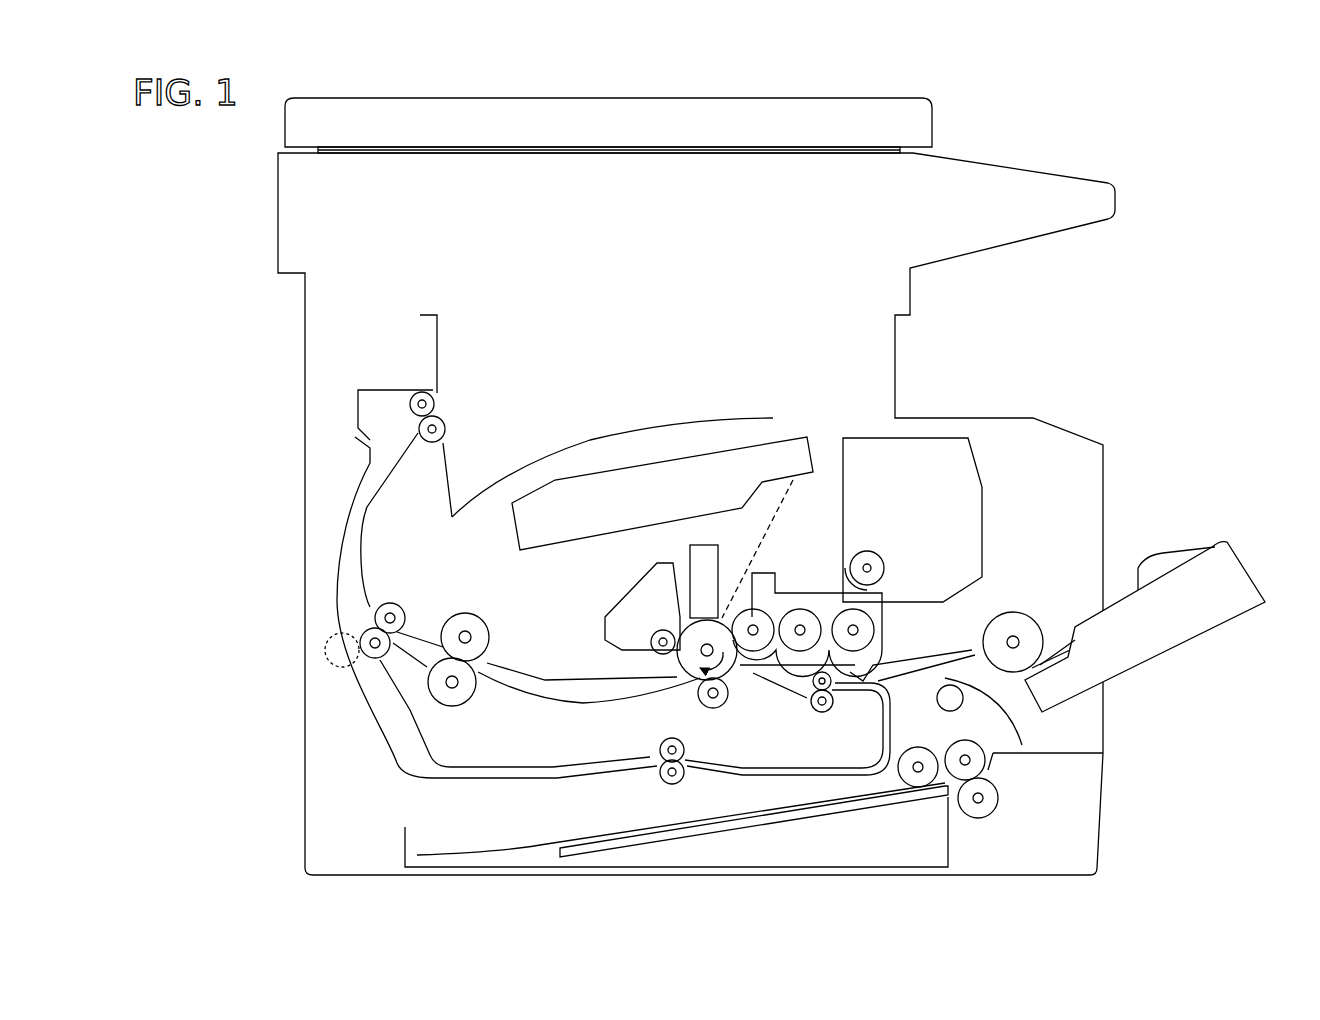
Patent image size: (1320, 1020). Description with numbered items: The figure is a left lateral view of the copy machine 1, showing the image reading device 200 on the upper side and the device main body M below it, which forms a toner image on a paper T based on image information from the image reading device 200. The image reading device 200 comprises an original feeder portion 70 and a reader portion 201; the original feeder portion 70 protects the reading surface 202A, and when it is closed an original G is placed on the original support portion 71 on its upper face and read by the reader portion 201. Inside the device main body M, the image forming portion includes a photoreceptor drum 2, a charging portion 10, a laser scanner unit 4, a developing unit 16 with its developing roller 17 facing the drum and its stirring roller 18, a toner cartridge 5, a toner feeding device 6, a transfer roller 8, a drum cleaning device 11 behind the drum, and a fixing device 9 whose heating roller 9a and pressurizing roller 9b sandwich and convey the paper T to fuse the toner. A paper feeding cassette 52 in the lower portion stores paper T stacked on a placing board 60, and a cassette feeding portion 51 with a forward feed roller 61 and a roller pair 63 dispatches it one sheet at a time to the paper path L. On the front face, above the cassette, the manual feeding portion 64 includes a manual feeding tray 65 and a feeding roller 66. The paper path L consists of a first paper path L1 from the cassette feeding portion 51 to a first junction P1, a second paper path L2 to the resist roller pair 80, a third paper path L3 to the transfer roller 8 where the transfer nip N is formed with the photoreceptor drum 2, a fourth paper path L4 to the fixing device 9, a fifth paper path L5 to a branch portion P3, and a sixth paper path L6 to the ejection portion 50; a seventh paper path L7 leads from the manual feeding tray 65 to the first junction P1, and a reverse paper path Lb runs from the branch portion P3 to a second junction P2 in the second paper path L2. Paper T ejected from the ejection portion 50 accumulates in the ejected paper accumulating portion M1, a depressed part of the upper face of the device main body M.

The copy machine 1 is at (1114, 98).
The image reading device 200 is at (1116, 154).
The reader portion 201 is at (940, 160).
The reading surface 202A is at (512, 147).
The original G is at (600, 148).
The original feeder portion 70 is at (888, 101).
The original support portion 71 is at (638, 100).
The device main body M is at (1067, 445).
The ejected paper accumulating portion M1 is at (563, 400).
The photoreceptor drum 2 is at (682, 655).
The laser scanner unit 4 is at (712, 462).
The toner cartridge 5 is at (935, 448).
The toner feeding device 6 is at (858, 568).
The transfer roller 8 is at (713, 705).
The fixing device 9 is at (497, 659).
The heating roller 9a is at (480, 630).
The pressurizing roller 9b is at (472, 665).
The charging portion 10 is at (715, 552).
The drum cleaning device 11 is at (640, 590).
The developing unit 16 is at (815, 585).
The developing roller 17 is at (760, 627).
The stirring roller 18 is at (872, 630).
The ejection portion 50 is at (450, 408).
The cassette feeding portion 51 is at (1012, 783).
The paper feeding cassette 52 is at (902, 848).
The placing board 60 is at (812, 812).
The forward feed roller 61 is at (905, 775).
The roller pair 63 is at (988, 817).
The manual feeding portion 64 is at (1185, 535).
The manual feeding tray 65 is at (1185, 637).
The feeding roller 66 is at (1010, 620).
The resist roller pair 80 is at (834, 712).
The paper path L is at (583, 672).
The first paper path L1 is at (977, 689).
The second paper path L2 is at (850, 675).
The third paper path L3 is at (780, 685).
The fourth paper path L4 is at (645, 698).
The fifth paper path L5 is at (395, 652).
The sixth paper path L6 is at (352, 522).
The seventh paper path L7 is at (975, 652).
The reverse paper path Lb is at (534, 775).
The transfer nip N is at (730, 678).
The first junction P1 is at (893, 676).
The second junction P2 is at (882, 689).
The branch portion P3 is at (370, 607).
The paper T is at (572, 848).